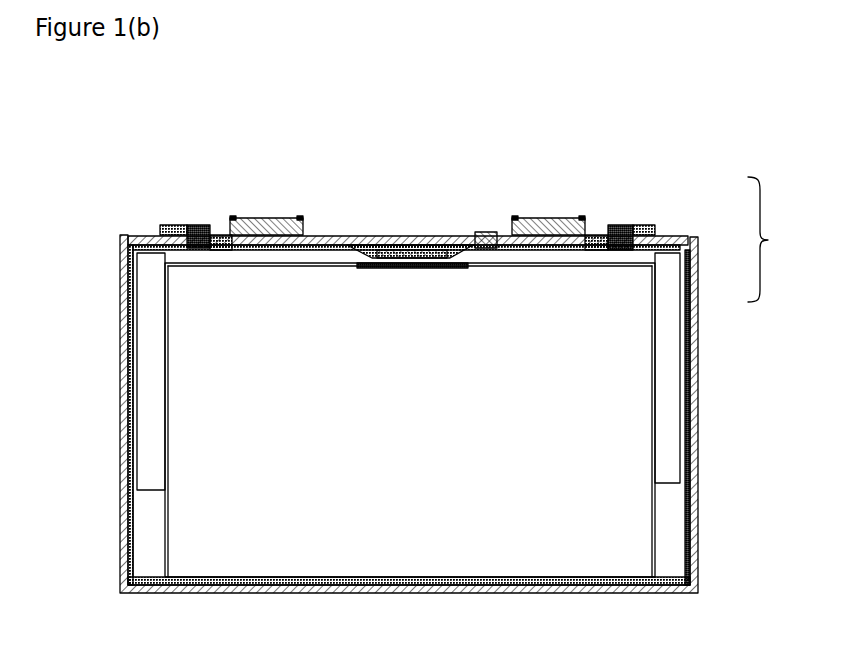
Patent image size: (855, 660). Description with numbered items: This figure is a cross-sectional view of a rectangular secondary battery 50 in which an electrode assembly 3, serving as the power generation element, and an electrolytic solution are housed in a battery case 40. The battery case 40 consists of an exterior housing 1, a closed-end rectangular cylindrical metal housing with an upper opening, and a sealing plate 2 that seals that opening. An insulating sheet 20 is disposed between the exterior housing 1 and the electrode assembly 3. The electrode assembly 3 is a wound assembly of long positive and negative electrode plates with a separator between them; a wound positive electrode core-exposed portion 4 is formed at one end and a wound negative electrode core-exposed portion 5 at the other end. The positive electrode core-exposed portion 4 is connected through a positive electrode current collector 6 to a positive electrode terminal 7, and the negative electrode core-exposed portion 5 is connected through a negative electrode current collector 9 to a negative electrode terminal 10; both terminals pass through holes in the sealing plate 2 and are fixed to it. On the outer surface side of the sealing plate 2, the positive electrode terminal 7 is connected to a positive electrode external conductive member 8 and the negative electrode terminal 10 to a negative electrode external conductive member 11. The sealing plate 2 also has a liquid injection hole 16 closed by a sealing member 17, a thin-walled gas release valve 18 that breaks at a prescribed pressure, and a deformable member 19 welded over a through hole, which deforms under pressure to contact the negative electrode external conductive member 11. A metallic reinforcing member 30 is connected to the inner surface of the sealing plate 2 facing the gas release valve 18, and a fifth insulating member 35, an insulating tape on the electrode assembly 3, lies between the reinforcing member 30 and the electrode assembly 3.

The rectangular secondary battery 50 is at (145, 147).
The battery case 40 is at (770, 239).
The exterior housing 1 is at (698, 287).
The sealing plate 2 is at (672, 236).
The electrode assembly 3 is at (458, 520).
The positive electrode core-exposed portion 4 is at (668, 533).
The negative electrode core-exposed portion 5 is at (147, 528).
The positive electrode current collector 6 is at (680, 362).
The negative electrode current collector 9 is at (145, 377).
The positive electrode terminal 7 is at (620, 226).
The negative electrode terminal 10 is at (197, 225).
The positive electrode external conductive member 8 is at (550, 219).
The negative electrode external conductive member 11 is at (275, 218).
The deformable member 19 is at (258, 218).
The liquid injection hole 16 is at (474, 240).
The sealing member 17 is at (486, 233).
The gas release valve 18 is at (420, 246).
The reinforcing member 30 is at (392, 258).
The fifth insulating member 35 is at (355, 265).
The insulating sheet 20 is at (125, 505).